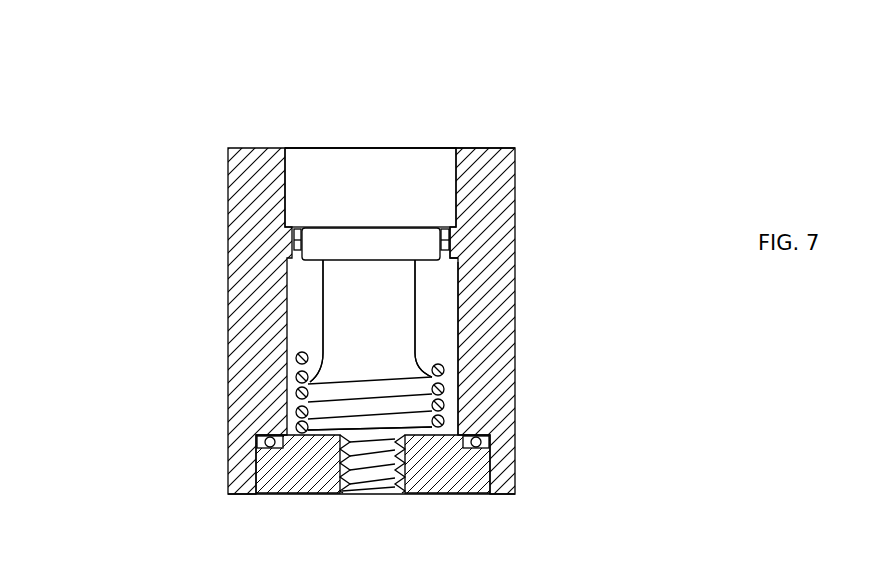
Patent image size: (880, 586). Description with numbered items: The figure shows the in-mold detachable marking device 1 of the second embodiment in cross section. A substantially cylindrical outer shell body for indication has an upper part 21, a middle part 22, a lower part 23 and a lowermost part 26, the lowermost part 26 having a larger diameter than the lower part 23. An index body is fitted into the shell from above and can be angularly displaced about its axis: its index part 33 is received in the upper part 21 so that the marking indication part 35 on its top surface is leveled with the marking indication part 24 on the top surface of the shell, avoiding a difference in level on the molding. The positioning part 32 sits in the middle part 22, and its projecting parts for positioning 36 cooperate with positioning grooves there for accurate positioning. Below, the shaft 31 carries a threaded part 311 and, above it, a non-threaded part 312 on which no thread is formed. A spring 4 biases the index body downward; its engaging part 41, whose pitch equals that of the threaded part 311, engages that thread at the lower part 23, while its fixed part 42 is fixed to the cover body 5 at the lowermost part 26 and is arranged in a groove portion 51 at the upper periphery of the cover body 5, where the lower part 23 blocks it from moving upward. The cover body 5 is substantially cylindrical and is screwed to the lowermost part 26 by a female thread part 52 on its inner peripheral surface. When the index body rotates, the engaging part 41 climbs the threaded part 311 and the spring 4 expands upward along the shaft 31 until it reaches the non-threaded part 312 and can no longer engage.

The marking device 1 is at (481, 81).
The upper part 21 is at (495, 168).
The middle part 22 is at (452, 240).
The lower part 23 is at (460, 338).
The marking indication part 24 is at (478, 148).
The lowermost part 26 is at (510, 478).
The shaft 31 is at (97, 288).
The threaded part 311 is at (297, 412).
The non-threaded part 312 is at (343, 343).
The positioning part 32 is at (293, 240).
The index part 33 is at (325, 190).
The marking indication part 35 is at (320, 147).
The projecting part for positioning 36 is at (460, 236).
The spring 4 is at (630, 336).
The engaging part 41 is at (510, 366).
The fixed part 42 is at (515, 437).
The cover body 5 is at (303, 495).
The groove portion 51 is at (262, 442).
The female thread part 52 is at (340, 483).